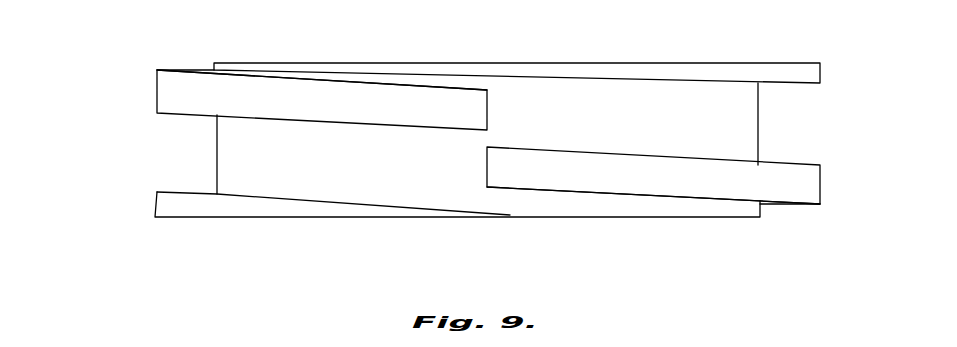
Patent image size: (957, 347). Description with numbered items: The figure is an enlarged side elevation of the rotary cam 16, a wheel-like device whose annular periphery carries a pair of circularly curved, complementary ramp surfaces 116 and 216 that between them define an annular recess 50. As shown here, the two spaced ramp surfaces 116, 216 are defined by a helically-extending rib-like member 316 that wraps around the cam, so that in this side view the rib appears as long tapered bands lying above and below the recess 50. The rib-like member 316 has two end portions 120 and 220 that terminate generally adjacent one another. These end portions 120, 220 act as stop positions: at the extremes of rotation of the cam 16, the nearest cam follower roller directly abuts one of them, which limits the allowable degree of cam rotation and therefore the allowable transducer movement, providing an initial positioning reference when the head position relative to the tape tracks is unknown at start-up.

The rotary cam 16 is at (707, 17).
The annular recess 50 is at (212, 160).
The ramp surface 116 is at (157, 193).
The end portion 120 is at (487, 165).
The ramp surface 216 is at (161, 113).
The end portion 220 is at (488, 116).
The helically-extending rib-like member 316 is at (312, 97).